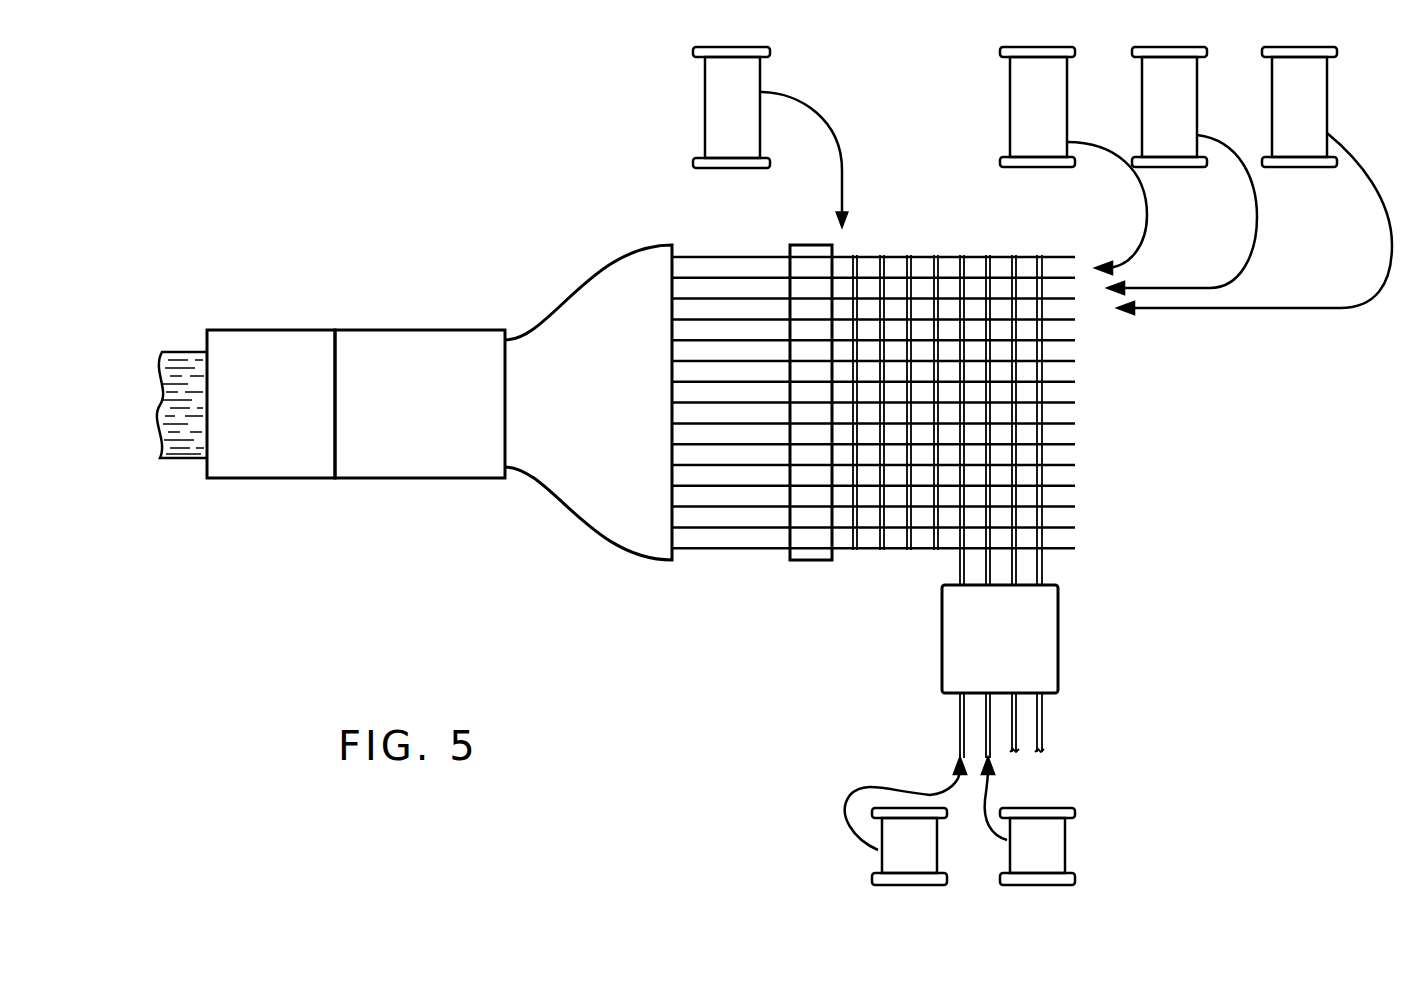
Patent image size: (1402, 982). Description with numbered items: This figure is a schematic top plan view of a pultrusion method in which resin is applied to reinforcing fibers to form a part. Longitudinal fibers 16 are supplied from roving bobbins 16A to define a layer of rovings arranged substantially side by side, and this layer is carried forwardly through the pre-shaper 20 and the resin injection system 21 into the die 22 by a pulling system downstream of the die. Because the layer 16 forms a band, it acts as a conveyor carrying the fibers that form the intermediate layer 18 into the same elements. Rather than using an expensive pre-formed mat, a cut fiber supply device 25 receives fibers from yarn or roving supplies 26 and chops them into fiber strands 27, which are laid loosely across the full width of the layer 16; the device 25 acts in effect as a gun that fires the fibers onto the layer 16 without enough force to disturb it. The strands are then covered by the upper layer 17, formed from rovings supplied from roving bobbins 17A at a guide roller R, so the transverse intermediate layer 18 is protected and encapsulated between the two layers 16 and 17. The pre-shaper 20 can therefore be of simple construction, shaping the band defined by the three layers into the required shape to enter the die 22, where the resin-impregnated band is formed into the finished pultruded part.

The longitudinal fibers 16 is at (1268, 312).
The roving bobbins 16A is at (995, 102).
The upper layer 17 is at (698, 257).
The roving bobbins 17A is at (690, 108).
The intermediate layer 18 is at (1018, 356).
The pre-shaper 20 is at (590, 278).
The resin injection system 21 is at (406, 318).
The die 22 is at (264, 318).
The cut fiber supply device 25 is at (1074, 648).
The yarn or roving supplies 26 is at (1090, 823).
The fiber strands 27 is at (1056, 477).
The guide roller R is at (790, 378).